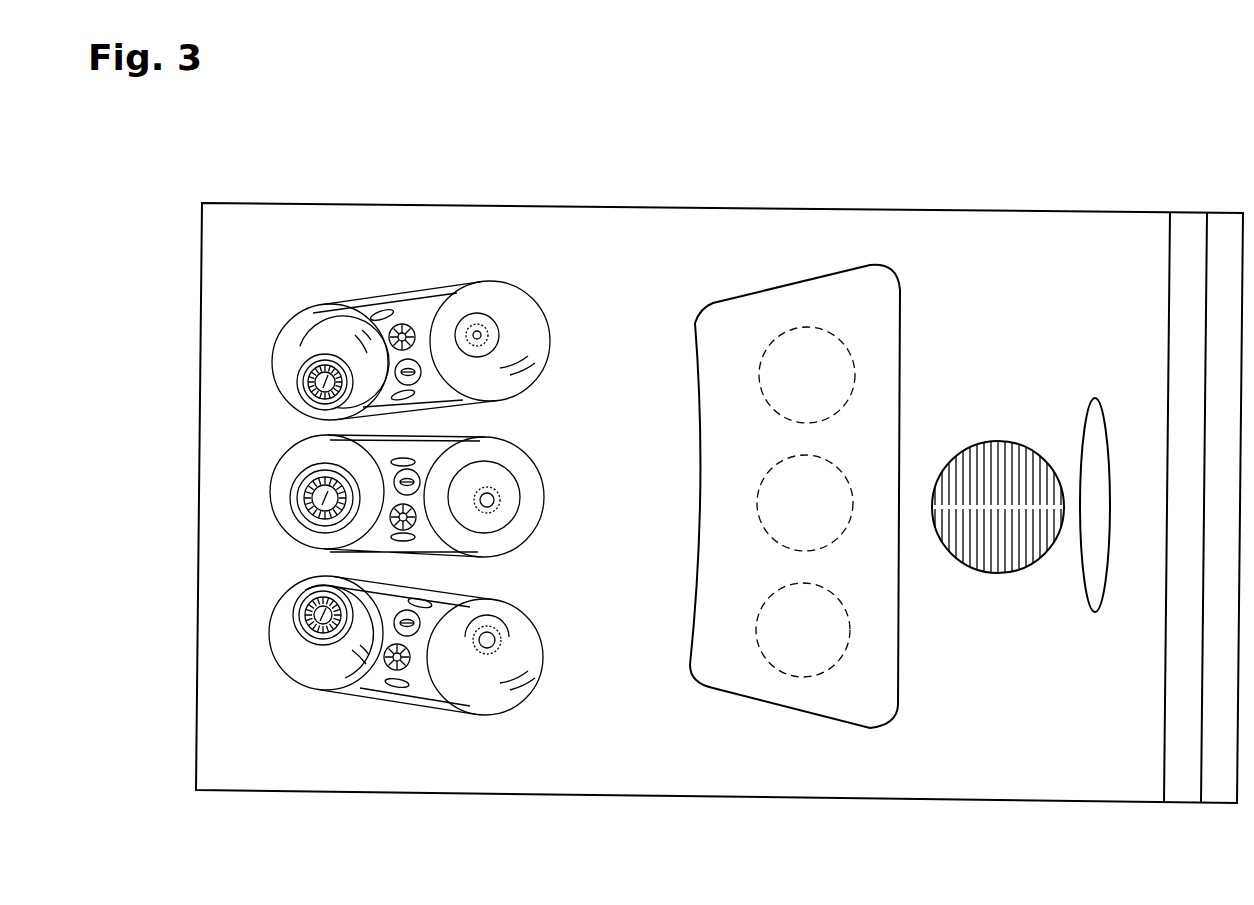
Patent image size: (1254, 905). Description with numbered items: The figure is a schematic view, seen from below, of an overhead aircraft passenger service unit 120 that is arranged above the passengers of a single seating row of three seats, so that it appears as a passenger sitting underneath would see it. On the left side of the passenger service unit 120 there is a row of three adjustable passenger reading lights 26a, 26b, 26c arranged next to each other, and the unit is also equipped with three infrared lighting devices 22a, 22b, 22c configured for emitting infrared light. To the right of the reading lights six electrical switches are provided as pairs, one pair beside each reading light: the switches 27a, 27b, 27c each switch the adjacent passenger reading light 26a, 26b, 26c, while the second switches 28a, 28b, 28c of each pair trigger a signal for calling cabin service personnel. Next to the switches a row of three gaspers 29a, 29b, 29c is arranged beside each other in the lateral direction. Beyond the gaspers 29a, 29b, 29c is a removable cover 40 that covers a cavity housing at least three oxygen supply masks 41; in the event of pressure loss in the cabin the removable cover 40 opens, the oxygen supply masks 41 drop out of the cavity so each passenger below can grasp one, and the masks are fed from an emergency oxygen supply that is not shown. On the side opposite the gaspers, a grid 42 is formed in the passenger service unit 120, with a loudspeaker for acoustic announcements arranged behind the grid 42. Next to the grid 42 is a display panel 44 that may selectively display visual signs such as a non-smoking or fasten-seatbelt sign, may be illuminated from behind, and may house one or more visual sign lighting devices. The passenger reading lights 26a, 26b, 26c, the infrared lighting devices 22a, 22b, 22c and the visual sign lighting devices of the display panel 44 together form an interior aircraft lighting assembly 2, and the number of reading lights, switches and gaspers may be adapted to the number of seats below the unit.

The interior aircraft lighting assembly 2 is at (600, 170).
The overhead aircraft passenger service unit 120 is at (945, 208).
The infrared lighting device 22a is at (404, 400).
The infrared lighting device 22b is at (403, 543).
The infrared lighting device 22c is at (393, 693).
The adjustable passenger reading light 26a is at (313, 347).
The adjustable passenger reading light 26b is at (305, 515).
The adjustable passenger reading light 26c is at (313, 643).
The electrical switch 27a is at (400, 322).
The electrical switch 27b is at (423, 528).
The electrical switch 27c is at (383, 670).
The electrical switch 28a is at (408, 358).
The electrical switch 28b is at (423, 463).
The electrical switch 28c is at (415, 648).
The gasper 29a is at (502, 320).
The gasper 29b is at (507, 513).
The gasper 29c is at (484, 667).
The removable cover 40 is at (793, 728).
The oxygen supply masks 41 is at (757, 383).
The grid 42 is at (998, 436).
The display panel 44 is at (1110, 440).